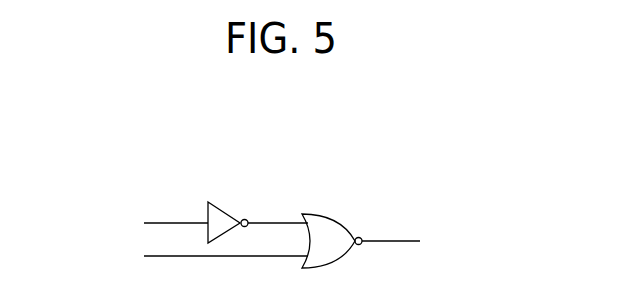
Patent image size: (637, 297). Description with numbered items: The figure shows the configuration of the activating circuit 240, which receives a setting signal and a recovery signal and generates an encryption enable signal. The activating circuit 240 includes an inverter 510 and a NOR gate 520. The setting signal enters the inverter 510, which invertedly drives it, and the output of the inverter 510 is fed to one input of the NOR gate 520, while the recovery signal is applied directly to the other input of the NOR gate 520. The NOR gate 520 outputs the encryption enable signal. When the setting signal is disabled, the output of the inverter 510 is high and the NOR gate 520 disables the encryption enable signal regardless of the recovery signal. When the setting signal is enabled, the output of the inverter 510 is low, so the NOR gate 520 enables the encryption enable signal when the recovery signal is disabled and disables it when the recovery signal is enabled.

The activating circuit 240 is at (110, 148).
The inverter 510 is at (220, 205).
The NOR gate 520 is at (344, 221).